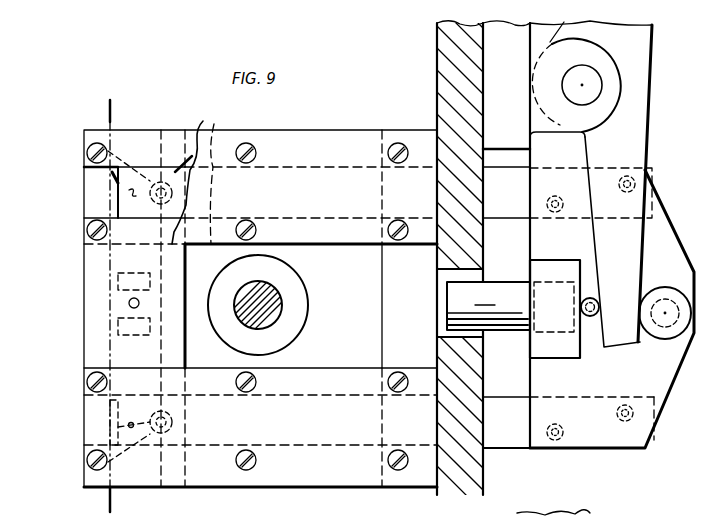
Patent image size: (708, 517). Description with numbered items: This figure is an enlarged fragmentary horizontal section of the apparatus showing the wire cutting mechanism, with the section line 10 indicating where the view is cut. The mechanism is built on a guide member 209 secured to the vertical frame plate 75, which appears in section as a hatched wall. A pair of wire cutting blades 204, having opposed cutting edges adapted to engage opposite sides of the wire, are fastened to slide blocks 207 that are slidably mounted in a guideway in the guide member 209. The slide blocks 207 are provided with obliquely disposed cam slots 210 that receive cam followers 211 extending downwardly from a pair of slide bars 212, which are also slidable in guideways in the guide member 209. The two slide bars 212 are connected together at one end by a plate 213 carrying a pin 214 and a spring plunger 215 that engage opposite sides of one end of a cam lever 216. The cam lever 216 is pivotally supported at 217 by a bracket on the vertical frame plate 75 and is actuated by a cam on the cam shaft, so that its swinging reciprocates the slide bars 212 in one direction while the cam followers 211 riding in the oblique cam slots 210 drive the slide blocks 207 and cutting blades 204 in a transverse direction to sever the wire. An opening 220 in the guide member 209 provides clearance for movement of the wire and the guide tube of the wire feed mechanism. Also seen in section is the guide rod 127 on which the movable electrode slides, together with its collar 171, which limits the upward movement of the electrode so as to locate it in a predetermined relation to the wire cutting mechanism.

The section line 10- 10 is at (140, 112).
The vertical frame plate 75 is at (450, 57).
The guide rod 127 is at (282, 300).
The collar 171 is at (300, 320).
The wire cutting blades 204 is at (118, 281).
The slide blocks 207 is at (110, 250).
The guide member 209 is at (333, 130).
The cam slots 210 is at (130, 192).
The cam followers 211 is at (150, 178).
The slide bars 212 is at (300, 490).
The plate 213 is at (584, 392).
The pin 214 is at (660, 340).
The spring plunger 215 is at (590, 265).
The cam lever 216 is at (612, 145).
The pivot 217 is at (592, 87).
The opening 220 is at (130, 302).